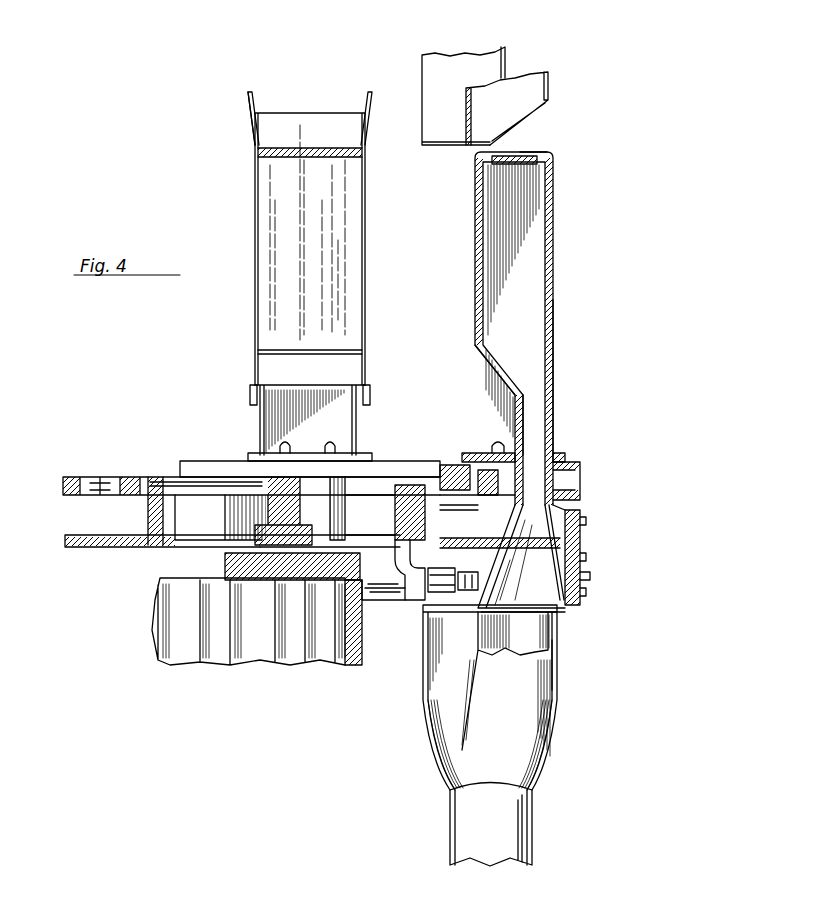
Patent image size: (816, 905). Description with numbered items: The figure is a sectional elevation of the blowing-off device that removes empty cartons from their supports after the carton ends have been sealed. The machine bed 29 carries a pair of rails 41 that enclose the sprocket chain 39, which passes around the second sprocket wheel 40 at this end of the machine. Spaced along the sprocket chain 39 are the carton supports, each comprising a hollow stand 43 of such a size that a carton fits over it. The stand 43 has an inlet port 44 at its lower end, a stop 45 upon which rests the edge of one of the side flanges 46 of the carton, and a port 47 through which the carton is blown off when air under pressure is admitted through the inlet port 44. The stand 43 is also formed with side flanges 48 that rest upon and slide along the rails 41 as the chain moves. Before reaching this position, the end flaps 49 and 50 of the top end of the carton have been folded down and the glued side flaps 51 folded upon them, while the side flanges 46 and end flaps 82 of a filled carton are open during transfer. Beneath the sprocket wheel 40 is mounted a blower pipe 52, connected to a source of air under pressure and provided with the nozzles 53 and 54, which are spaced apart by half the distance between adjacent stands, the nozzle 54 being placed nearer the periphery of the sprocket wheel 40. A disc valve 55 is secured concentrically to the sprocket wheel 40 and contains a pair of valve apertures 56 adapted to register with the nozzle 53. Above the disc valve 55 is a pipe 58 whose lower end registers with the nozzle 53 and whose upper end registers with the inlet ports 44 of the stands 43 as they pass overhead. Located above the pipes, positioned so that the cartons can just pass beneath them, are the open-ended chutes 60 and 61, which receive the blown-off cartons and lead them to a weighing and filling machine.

The bed 29 is at (262, 655).
The sprocket chain 39 is at (103, 480).
The second sprocket wheel 40 is at (385, 480).
The rails 41 is at (440, 467).
The hollow stand 43 is at (530, 256).
The inlet port 44 is at (528, 412).
The stop 45 is at (553, 382).
The side flanges 46 is at (302, 380).
The port 47 is at (508, 156).
The side flanges 48 is at (248, 453).
The end flap 49 is at (372, 108).
The end flap 50 is at (249, 108).
The side flaps 51 is at (296, 128).
The blower pipe 52 is at (532, 812).
The nozzle 53 is at (580, 570).
The nozzle 54 is at (423, 650).
The disc valve 55 is at (66, 540).
The valve apertures 56 is at (110, 545).
The pipe 58 is at (565, 520).
The chute 60 is at (548, 84).
The chute 61 is at (480, 70).
The end flaps 82 is at (257, 392).